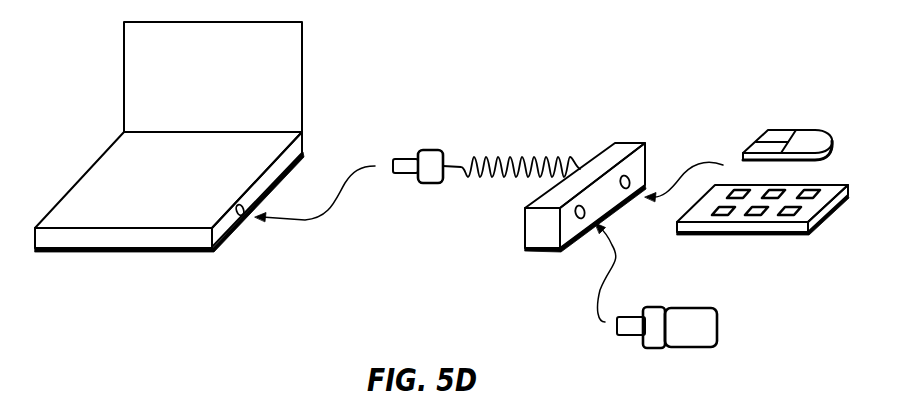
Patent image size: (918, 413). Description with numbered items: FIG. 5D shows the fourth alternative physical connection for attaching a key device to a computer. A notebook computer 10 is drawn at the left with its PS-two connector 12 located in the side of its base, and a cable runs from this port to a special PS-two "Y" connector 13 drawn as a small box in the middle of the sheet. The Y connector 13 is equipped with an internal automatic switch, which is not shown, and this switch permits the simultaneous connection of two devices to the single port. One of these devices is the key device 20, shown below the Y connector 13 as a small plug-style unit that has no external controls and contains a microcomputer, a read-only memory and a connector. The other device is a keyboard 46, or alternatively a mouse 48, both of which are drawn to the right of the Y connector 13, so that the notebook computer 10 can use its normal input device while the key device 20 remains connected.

The notebook computer 10 is at (302, 67).
The PS-2 connector 12 is at (243, 216).
The PS-2 "Y" connector 13 is at (647, 142).
The key device 20 is at (717, 337).
The keyboard 46 is at (795, 235).
The mouse 48 is at (812, 128).